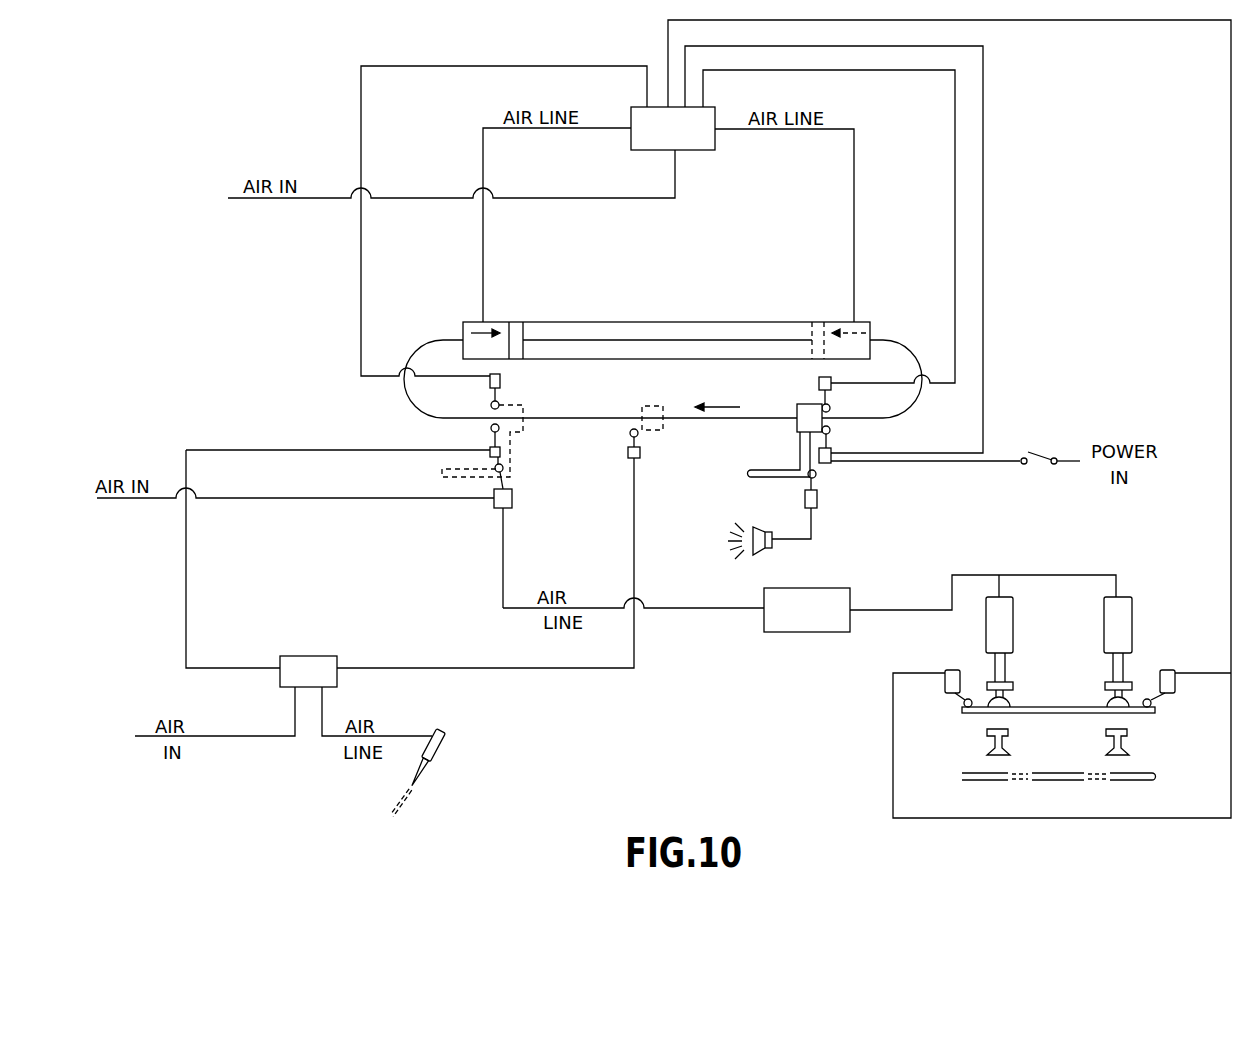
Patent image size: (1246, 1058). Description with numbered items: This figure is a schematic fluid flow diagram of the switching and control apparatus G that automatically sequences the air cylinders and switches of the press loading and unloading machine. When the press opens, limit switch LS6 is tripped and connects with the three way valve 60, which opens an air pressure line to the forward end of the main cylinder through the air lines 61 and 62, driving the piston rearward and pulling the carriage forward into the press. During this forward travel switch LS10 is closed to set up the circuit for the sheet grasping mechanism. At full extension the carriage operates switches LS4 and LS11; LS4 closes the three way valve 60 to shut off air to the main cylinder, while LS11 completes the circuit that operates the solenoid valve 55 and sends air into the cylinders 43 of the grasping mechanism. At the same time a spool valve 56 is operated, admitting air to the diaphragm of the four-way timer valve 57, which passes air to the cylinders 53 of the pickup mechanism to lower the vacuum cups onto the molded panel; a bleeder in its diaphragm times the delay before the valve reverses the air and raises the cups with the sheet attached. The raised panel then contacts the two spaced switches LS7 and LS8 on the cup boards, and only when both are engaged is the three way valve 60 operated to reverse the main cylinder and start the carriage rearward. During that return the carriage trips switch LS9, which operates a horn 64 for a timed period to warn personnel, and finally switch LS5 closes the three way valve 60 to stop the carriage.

The cylinders 43 is at (440, 758).
The cylinders 53 is at (1013, 613).
The solenoid valve 55 is at (337, 683).
The spool valve 56 is at (512, 498).
The 4-way timer valve 57 is at (790, 632).
The three way valve 60 is at (715, 140).
The air line 61 is at (632, 199).
The air line 62 is at (537, 128).
The horn 64 is at (755, 525).
The switching and control apparatus G is at (670, 700).
The limit switch LS4 is at (502, 421).
The limit switch LS5 is at (793, 391).
The limit switch LS6 is at (919, 444).
The limit switch LS7 is at (1173, 698).
The limit switch LS8 is at (936, 698).
The limit switch LS9 is at (816, 508).
The limit switch LS10 is at (517, 537).
The limit switch LS11 is at (469, 456).